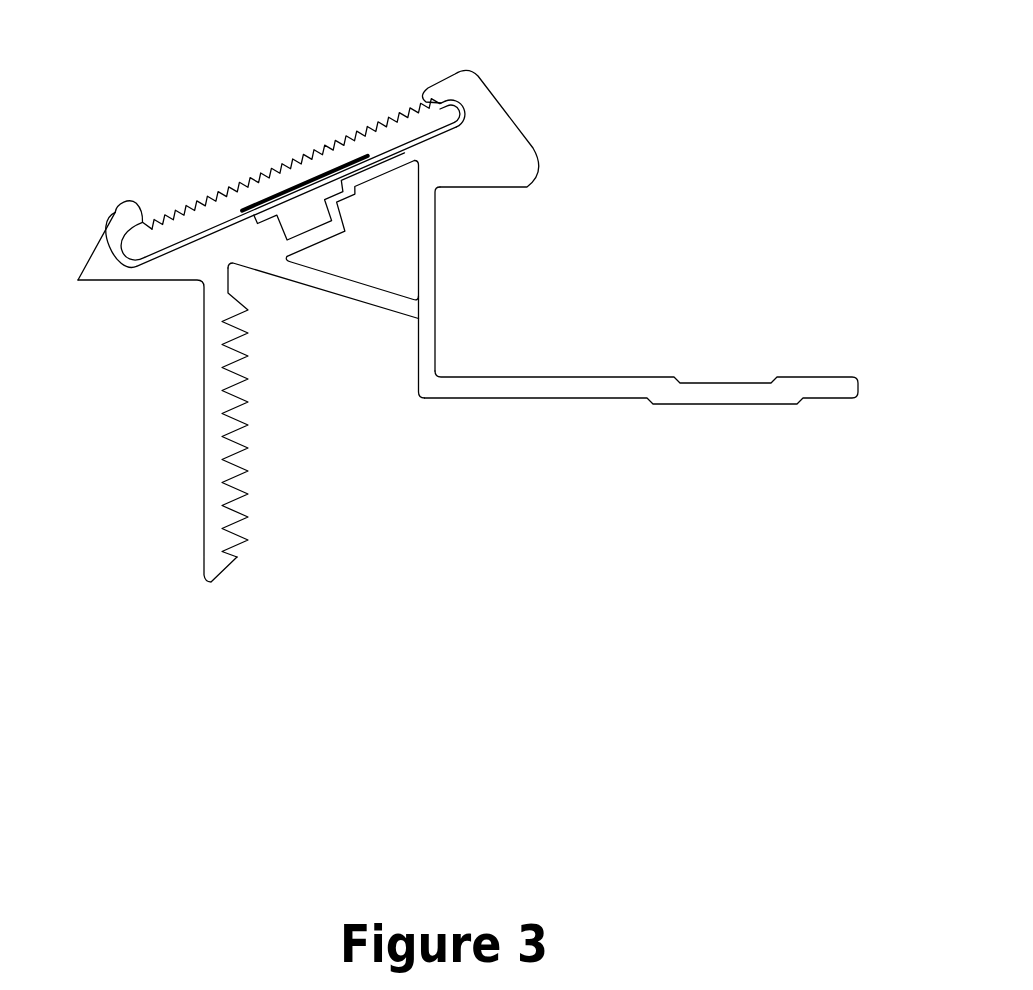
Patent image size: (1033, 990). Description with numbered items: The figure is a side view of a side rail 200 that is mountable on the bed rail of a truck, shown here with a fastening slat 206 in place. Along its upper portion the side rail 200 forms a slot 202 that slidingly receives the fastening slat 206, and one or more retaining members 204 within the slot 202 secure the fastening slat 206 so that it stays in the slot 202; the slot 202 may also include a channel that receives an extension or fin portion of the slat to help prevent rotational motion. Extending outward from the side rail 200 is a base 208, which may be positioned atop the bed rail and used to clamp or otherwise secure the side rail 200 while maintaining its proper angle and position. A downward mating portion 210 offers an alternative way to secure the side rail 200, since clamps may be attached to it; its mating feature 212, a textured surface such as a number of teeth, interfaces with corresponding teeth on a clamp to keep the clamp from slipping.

The side rail 200 is at (541, 158).
The slot 202 is at (443, 145).
The retaining member 204 is at (112, 212).
The fastening slat 206 is at (241, 183).
The base 208 is at (725, 398).
The mating portion 210 is at (203, 490).
The mating feature 212 is at (238, 539).